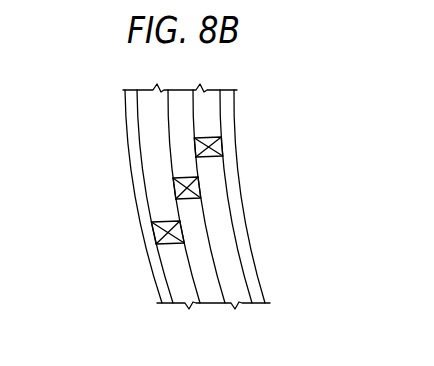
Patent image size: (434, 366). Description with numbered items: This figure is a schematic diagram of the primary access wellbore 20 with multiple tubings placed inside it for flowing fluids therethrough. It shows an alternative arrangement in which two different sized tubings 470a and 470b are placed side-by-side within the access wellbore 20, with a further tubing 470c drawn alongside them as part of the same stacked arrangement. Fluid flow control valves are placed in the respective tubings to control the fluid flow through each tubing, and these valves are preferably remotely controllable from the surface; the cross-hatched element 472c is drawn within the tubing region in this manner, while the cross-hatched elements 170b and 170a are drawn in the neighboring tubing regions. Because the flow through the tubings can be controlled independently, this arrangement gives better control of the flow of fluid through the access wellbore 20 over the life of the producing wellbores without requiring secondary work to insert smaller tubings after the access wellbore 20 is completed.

The access wellbore 20 is at (252, 222).
The tubing 470a is at (142, 176).
The tubing 470b is at (194, 124).
The third layer 470c is at (246, 272).
The cross-hatched element in second layer 472c is at (210, 147).
The cross-hatched element 170b is at (176, 188).
The cross-hatched element 170a is at (155, 237).